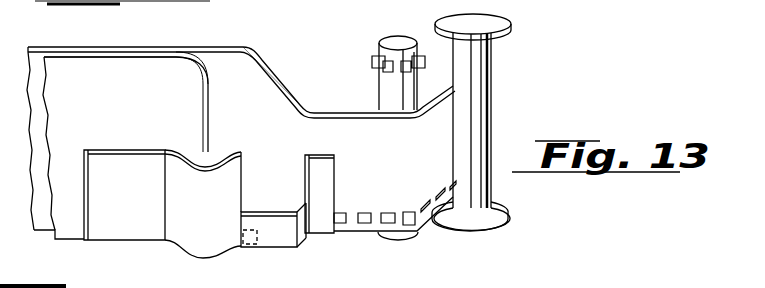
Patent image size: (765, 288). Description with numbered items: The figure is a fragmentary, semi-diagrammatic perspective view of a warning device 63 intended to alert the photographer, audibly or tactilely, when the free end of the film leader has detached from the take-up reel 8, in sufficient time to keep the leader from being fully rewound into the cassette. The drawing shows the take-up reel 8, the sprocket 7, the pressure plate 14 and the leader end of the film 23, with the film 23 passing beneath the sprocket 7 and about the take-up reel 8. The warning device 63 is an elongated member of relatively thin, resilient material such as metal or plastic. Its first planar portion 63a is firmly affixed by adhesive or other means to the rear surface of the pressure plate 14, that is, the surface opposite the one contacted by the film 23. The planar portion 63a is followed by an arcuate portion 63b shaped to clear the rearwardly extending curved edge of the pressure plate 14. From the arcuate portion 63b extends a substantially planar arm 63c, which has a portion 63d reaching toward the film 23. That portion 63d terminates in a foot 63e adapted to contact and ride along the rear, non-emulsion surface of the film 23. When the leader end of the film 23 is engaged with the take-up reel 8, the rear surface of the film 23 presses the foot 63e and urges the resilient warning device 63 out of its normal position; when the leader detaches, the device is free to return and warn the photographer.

The sprocket 7 is at (399, 40).
The take-up reel 8 is at (506, 26).
The pressure plate 14 is at (128, 107).
The film 23 is at (243, 48).
The warning device 63 is at (270, 179).
The first planar portion 63a is at (155, 134).
The arcuate portion 63b is at (222, 189).
The planar arm 63c is at (270, 224).
The portion extending toward the film 63d is at (300, 220).
The foot 63e is at (324, 172).